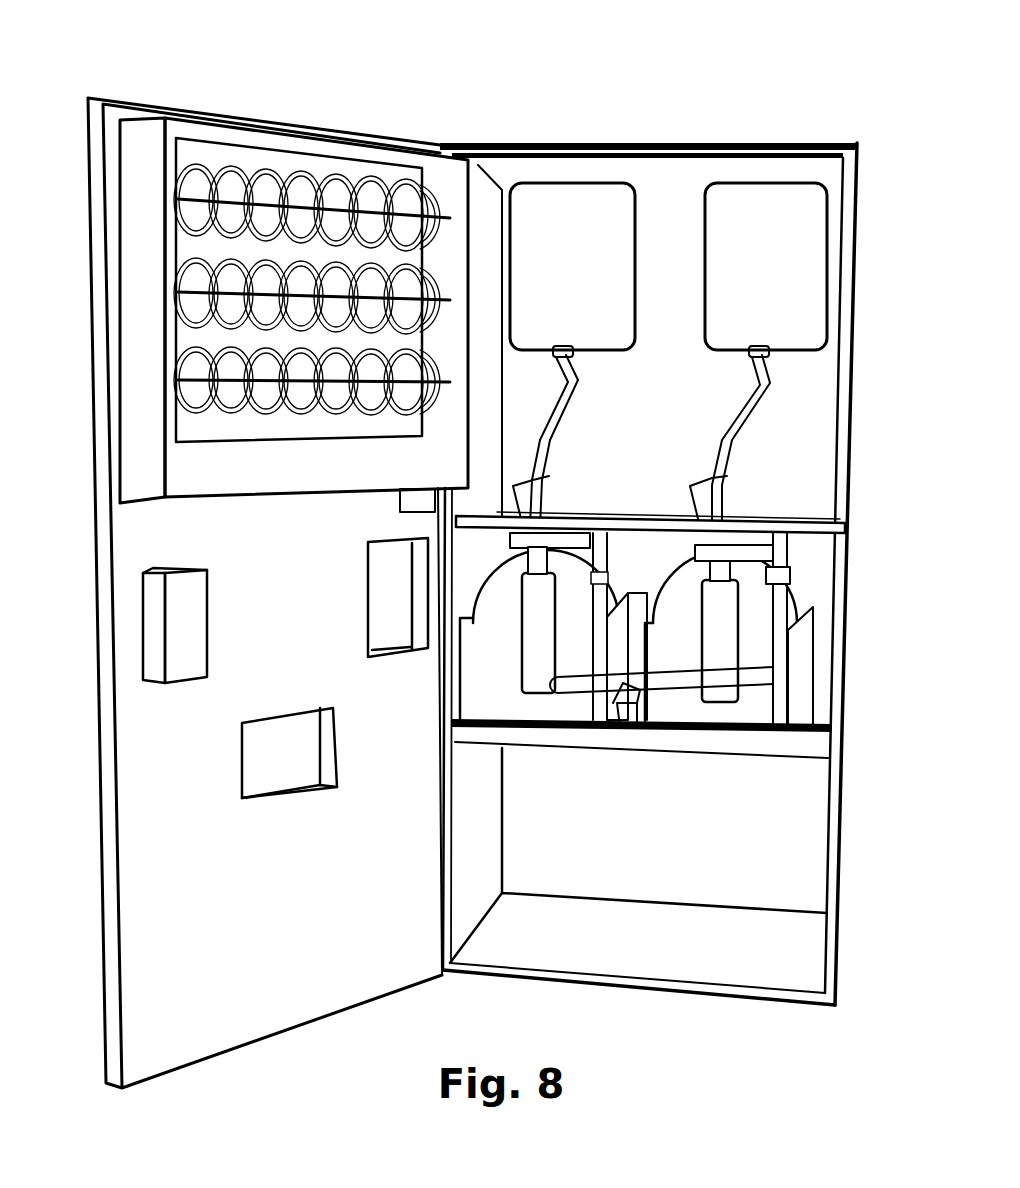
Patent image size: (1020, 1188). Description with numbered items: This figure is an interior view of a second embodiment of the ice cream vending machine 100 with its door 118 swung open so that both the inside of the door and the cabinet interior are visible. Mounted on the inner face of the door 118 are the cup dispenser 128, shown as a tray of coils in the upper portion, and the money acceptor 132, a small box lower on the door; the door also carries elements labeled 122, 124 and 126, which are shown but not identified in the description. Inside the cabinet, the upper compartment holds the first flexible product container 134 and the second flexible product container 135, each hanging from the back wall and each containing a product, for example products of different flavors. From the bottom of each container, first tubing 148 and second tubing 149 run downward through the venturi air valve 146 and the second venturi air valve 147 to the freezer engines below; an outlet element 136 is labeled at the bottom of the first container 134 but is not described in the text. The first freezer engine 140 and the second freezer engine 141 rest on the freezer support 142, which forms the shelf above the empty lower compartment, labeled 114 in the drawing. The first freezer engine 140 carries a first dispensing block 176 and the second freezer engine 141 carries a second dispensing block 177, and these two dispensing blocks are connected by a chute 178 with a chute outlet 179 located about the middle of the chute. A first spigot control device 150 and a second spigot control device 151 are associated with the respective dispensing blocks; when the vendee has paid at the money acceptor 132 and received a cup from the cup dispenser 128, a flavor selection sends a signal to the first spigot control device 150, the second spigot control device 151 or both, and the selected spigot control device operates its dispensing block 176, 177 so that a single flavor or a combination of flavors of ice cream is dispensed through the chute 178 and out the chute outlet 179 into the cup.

The ice cream vending machine 100 is at (701, 128).
The cabinet lower compartment 114 is at (800, 848).
The door 118 is at (100, 906).
The door inner panel 122 is at (290, 900).
The display recess 124 is at (387, 577).
The delivery opening 126 is at (243, 747).
The cup dispenser 128 is at (136, 356).
The money acceptor 132 is at (142, 613).
The first flexible product container 134 is at (766, 266).
The second flexible product container 135 is at (572, 270).
The bag outlet 136 is at (776, 360).
The first freezer engine 140 is at (815, 642).
The second freezer engine 141 is at (626, 579).
The freezer support 142 is at (763, 760).
The venturi air valve 146 is at (729, 498).
The second venturi air valve 147 is at (555, 492).
The first tubing 148 is at (740, 421).
The second tubing 149 is at (575, 427).
The first spigot control device 150 is at (798, 573).
The second spigot control device 151 is at (619, 561).
The first dispensing block 176 is at (740, 617).
The second dispensing block 177 is at (617, 560).
The chute 178 is at (682, 677).
The chute outlet 179 is at (644, 688).